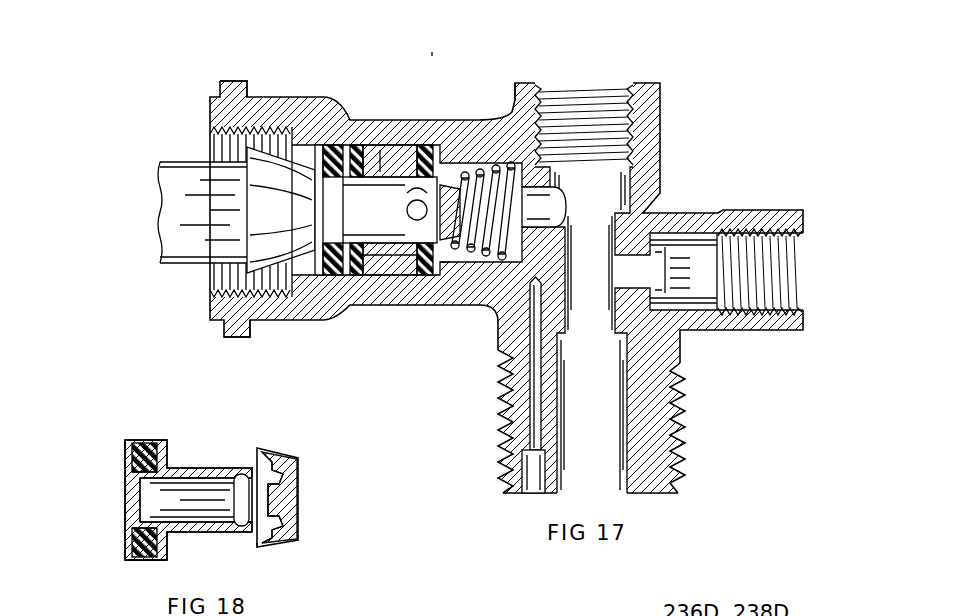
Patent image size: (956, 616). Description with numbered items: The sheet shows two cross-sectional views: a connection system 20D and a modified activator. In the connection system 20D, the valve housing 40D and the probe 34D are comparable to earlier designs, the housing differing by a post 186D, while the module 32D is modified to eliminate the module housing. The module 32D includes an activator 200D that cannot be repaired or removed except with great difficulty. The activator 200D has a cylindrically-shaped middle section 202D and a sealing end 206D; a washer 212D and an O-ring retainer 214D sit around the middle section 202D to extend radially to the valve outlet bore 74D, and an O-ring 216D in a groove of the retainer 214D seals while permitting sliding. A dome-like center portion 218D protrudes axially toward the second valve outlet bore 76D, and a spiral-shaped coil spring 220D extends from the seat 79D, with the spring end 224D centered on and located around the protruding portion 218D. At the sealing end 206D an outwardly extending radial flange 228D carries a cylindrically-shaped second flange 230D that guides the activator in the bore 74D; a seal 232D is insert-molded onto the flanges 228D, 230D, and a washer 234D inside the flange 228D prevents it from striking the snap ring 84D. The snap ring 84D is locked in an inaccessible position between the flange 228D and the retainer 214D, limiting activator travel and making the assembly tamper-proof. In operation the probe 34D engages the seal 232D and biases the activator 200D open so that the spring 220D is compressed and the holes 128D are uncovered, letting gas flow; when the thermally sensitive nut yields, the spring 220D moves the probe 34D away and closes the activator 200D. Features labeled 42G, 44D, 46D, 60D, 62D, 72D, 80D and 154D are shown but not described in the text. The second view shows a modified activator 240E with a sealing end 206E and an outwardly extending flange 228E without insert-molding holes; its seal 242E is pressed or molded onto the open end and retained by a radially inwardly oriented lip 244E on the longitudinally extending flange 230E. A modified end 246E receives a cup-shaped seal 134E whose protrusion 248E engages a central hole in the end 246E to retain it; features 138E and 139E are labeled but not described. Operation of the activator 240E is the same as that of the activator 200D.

In FIG. 17, the connection system 20D is at (432, 55).
In FIG. 17, the module 32D is at (405, 291).
In FIG. 17, the probe 34D is at (174, 263).
In FIG. 17, the valve housing 40D is at (683, 211).
In FIG. 17, the threaded stem 42G is at (683, 435).
In FIG. 17, the outlet threads 44D is at (760, 332).
In FIG. 17, the threaded port 46D is at (660, 108).
In FIG. 17, the passage 60D is at (593, 315).
In FIG. 17, the valve seat 62D is at (603, 207).
In FIG. 17, the threads 72D is at (208, 142).
In FIG. 17, the valve outlet bore 74D is at (372, 277).
In FIG. 17, the second valve outlet bore 76D is at (450, 248).
In FIG. 17, the seat 79D is at (545, 80).
In FIG. 17, the plunger 80D is at (553, 208).
In FIG. 17, the snap ring 84D is at (380, 150).
In FIG. 17, the holes 128D is at (407, 208).
In FIG. 17, the flared tube end 154D is at (302, 208).
In FIG. 17, the post 186D is at (227, 80).
In FIG. 17, the activator 200D is at (388, 165).
In FIG. 17, the middle section 202D is at (368, 165).
In FIG. 17, the sealing end 206D is at (299, 142).
In FIG. 17, the washer 212D is at (418, 275).
In FIG. 17, the O-ring retainer 214D is at (398, 150).
In FIG. 17, the O-ring 216D is at (392, 277).
In FIG. 17, the dome-like center portion 218D is at (440, 265).
In FIG. 17, the coil spring 220D is at (497, 170).
In FIG. 17, the spring end 224D is at (452, 173).
In FIG. 17, the radial flange 228D is at (350, 144).
In FIG. 17, the cylindrical second flange 230D is at (322, 276).
In FIG. 17, the seal 232D is at (292, 276).
In FIG. 17, the washer 234D is at (363, 143).
In FIG. 18, the cup-shaped seal 134E is at (298, 508).
In FIG. 18, the flange 138E is at (283, 547).
In FIG. 18, the lip 139E is at (258, 550).
In FIG. 18, the sealing end 206E is at (127, 566).
In FIG. 18, the outwardly extending flange 228E is at (168, 534).
In FIG. 18, the longitudinally extending flange 230E is at (156, 443).
In FIG. 18, the activator 240E is at (157, 565).
In FIG. 18, the seal 242E is at (128, 547).
In FIG. 18, the lip 244E is at (128, 456).
In FIG. 18, the modified end 246E is at (245, 472).
In FIG. 18, the protrusion 248E is at (272, 500).